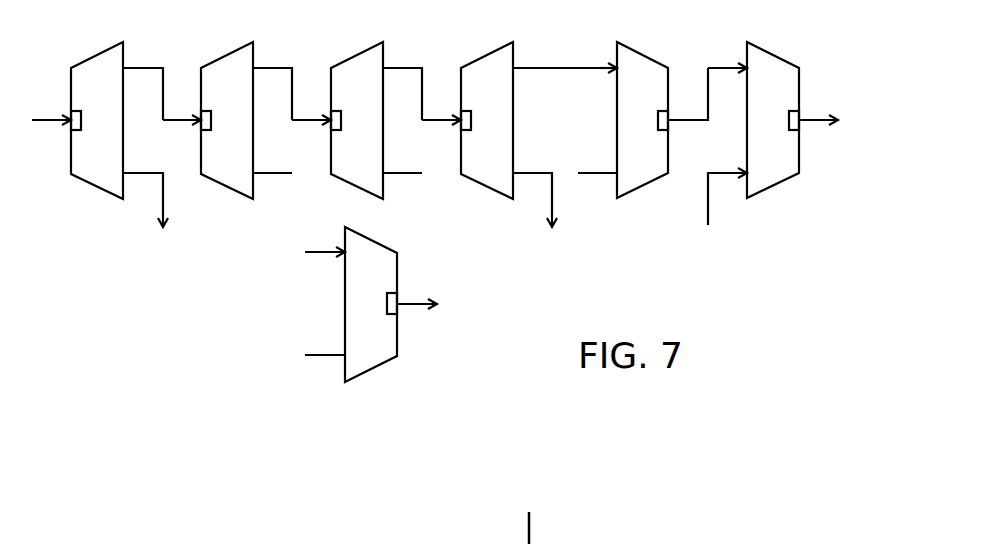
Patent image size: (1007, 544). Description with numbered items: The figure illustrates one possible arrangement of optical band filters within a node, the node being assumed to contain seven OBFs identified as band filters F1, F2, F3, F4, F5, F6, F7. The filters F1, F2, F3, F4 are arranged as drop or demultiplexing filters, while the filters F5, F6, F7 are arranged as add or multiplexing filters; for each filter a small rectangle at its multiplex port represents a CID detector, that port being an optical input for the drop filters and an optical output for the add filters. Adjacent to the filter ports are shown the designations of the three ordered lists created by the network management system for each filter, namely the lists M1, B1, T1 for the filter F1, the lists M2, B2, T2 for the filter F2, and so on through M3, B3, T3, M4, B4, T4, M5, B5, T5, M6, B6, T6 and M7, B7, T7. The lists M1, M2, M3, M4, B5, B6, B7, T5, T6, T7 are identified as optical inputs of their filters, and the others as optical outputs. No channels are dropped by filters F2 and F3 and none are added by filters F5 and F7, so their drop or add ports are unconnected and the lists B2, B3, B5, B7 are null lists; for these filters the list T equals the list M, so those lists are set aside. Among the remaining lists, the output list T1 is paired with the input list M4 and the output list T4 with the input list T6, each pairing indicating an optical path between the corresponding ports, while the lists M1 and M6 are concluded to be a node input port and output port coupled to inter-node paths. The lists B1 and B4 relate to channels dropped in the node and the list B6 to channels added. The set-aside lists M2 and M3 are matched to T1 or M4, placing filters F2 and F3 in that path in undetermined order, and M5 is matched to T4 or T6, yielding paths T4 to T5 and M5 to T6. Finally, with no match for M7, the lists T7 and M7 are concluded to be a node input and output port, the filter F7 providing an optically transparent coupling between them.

The optical band filter F1 is at (97, 120).
The optical band filter F2 is at (227, 120).
The optical band filter F3 is at (357, 120).
The optical band filter F4 is at (487, 120).
The optical band filter F5 is at (642, 120).
The optical band filter F6 is at (773, 120).
The optical band filter F7 is at (371, 304).
The ordered list T T1 is at (143, 74).
The ordered list T T2 is at (272, 74).
The ordered list T T3 is at (402, 74).
The ordered list T T4 is at (565, 50).
The ordered list T T5 is at (601, 47).
The ordered list T T6 is at (727, 49).
The ordered list T T7 is at (325, 235).
The ordered list M M1 is at (51, 102).
The ordered list M M2 is at (182, 102).
The ordered list M M3 is at (311, 102).
The ordered list M M4 is at (441, 102).
The ordered list M M5 is at (688, 94).
The ordered list M M6 is at (818, 102).
The ordered list M M7 is at (417, 287).
The ordered list B B1 is at (145, 200).
The ordered list B B2 is at (272, 193).
The ordered list B B3 is at (402, 193).
The ordered list B B4 is at (535, 200).
The ordered list B B5 is at (597, 193).
The ordered list B B6 is at (727, 196).
The ordered list B B7 is at (325, 375).